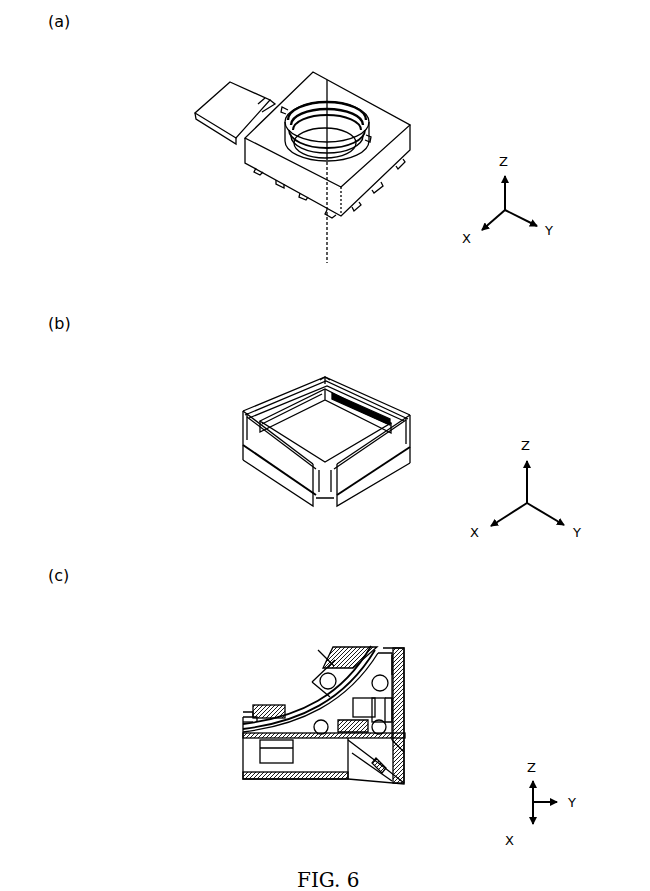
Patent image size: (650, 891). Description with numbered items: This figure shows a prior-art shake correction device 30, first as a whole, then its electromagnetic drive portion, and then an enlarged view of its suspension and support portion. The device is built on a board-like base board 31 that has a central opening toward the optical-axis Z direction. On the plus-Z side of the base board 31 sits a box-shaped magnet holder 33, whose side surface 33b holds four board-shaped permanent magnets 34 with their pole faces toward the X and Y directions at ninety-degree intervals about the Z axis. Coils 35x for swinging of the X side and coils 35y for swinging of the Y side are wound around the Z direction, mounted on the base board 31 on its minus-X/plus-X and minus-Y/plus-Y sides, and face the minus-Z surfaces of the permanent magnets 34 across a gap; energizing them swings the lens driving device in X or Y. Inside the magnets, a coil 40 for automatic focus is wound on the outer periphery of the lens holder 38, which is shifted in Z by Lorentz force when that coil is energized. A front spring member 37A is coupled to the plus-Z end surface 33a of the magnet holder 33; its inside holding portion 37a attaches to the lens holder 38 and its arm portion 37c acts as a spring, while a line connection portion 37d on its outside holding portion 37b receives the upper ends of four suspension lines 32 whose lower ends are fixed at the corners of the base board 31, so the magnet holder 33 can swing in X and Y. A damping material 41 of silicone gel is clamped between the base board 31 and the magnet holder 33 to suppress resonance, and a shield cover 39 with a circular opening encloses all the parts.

The shake correction device 30 is at (436, 39).
The lens holder 38 is at (349, 101).
The shield cover 39 is at (266, 153).
The permanent magnets 34 is at (275, 388).
The coil for automatic focus 40 is at (397, 403).
The coils for swinging of X side 35x is at (357, 424).
The coils for swinging of Y side 35y is at (387, 500).
The base board 31 is at (394, 779).
The suspension lines 32 is at (404, 768).
The damping material 41 is at (356, 780).
The magnet holder 33 is at (243, 717).
The end surface of the magnet holder 33a is at (298, 712).
The side surface of the magnet holder 33b is at (252, 758).
The front spring member 37A is at (371, 647).
The inside holding portion 37a is at (332, 664).
The outside holding portion 37b is at (410, 662).
The arm portion 37c is at (344, 647).
The line connection portion 37d is at (407, 709).